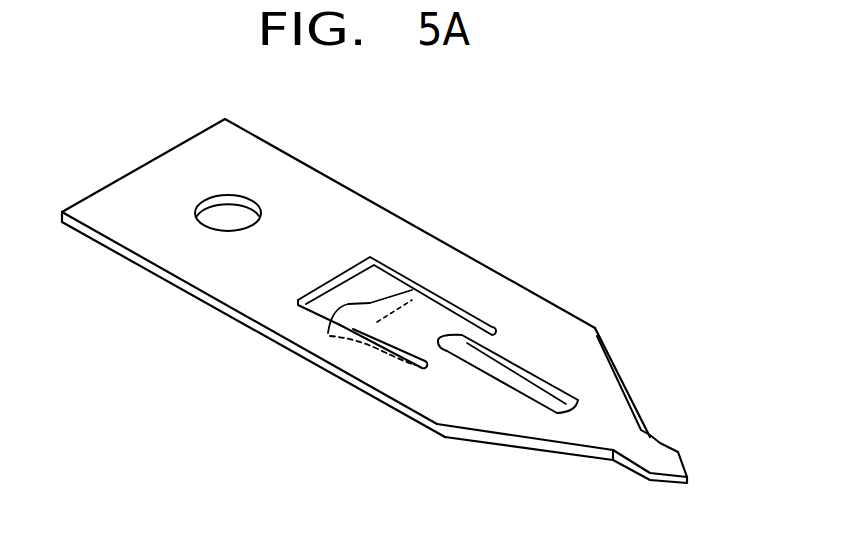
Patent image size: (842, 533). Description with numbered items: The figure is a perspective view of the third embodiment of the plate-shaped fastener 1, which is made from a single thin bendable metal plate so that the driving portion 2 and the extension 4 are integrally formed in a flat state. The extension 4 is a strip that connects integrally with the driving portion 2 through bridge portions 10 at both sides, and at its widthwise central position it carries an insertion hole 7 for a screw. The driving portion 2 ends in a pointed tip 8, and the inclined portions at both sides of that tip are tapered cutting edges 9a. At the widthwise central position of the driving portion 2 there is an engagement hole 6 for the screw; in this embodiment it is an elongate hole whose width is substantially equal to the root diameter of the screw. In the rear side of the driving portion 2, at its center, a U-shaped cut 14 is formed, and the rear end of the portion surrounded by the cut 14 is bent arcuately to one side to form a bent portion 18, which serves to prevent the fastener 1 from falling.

The plate-shaped fastener 1 is at (130, 267).
The driving portion 2 is at (578, 352).
The extension 4 is at (303, 213).
The engagement hole 6 is at (540, 337).
The insertion hole 7 is at (228, 217).
The pointed tip 8 is at (677, 487).
The tapered cutting edges 9a is at (627, 393).
The bridge portions 10 is at (413, 260).
The cut 14 is at (465, 310).
The bent portion 18 is at (285, 332).